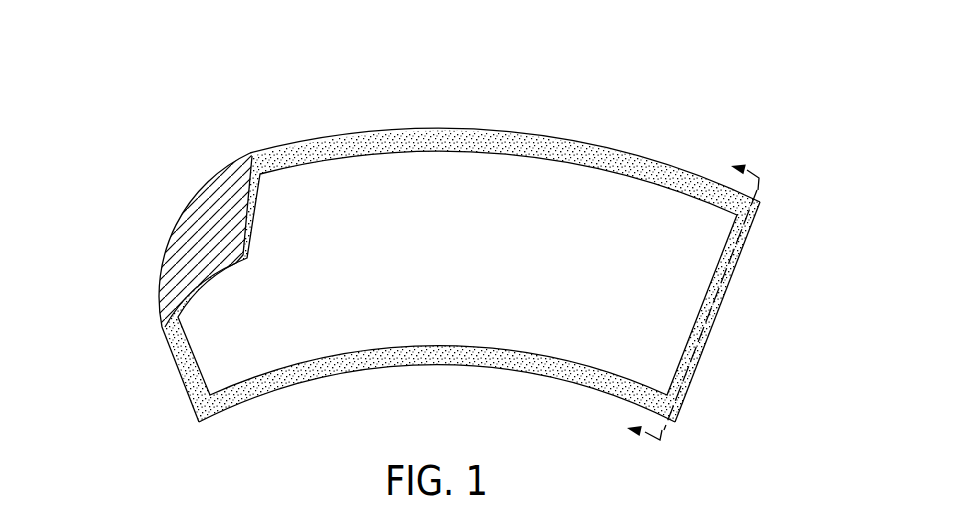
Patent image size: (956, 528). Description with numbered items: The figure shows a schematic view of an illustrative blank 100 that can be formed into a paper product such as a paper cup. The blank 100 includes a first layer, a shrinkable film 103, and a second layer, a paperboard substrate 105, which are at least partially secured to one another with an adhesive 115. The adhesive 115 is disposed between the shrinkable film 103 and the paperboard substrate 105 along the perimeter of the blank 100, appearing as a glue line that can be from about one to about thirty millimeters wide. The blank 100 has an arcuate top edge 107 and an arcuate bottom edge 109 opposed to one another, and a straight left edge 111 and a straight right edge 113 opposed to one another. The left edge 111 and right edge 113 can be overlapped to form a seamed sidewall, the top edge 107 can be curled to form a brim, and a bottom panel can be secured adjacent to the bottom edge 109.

The blank 100 is at (157, 56).
The shrinkable film 103 is at (250, 197).
The paperboard substrate 105 is at (190, 260).
The top edge 107 is at (614, 152).
The bottom edge 109 is at (313, 383).
The left edge 111 is at (188, 384).
The right edge 113 is at (740, 258).
The adhesive 115 is at (472, 140).